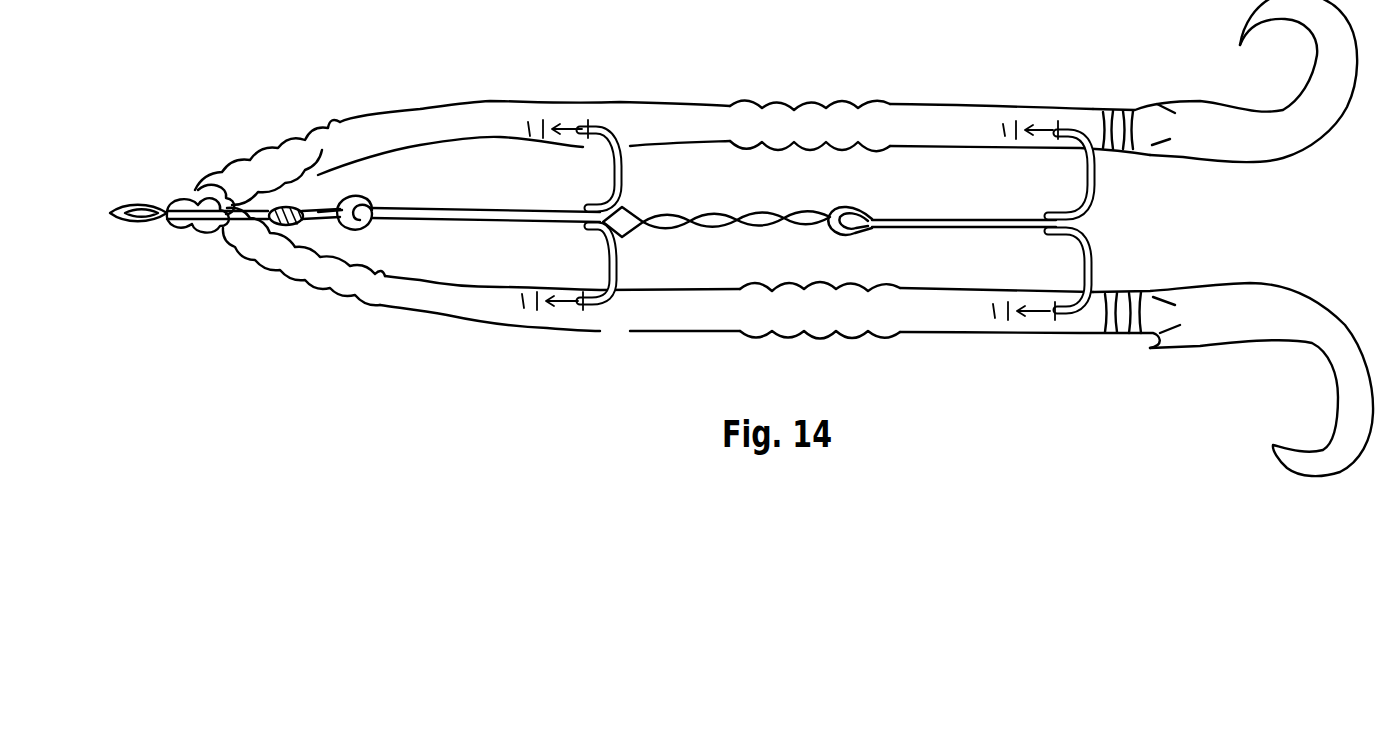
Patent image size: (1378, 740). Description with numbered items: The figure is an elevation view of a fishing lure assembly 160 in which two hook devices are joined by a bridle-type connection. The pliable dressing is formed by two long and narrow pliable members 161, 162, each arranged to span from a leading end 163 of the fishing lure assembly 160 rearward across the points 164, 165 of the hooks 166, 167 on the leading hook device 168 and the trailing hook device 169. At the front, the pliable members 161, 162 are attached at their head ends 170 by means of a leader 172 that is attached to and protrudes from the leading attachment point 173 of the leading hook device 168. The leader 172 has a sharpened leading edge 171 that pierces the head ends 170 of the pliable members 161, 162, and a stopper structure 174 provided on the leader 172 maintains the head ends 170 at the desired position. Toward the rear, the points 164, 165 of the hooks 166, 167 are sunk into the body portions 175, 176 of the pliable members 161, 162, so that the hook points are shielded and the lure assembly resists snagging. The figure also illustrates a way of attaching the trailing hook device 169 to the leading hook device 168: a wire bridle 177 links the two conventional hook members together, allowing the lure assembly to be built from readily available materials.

The fishing lure assembly 160 is at (519, 377).
The pliable member 161 is at (413, 120).
The pliable member 162 is at (435, 300).
The leading end 163 is at (158, 225).
The point 164 is at (555, 128).
The point 165 is at (1028, 126).
The hook 166 is at (623, 155).
The hook 167 is at (1097, 172).
The leading hook device 168 is at (506, 208).
The trailing hook device 169 is at (937, 222).
The head end 170 is at (201, 185).
The sharpened leading edge 171 is at (125, 205).
The leader 172 is at (322, 217).
The leading attachment point 173 is at (370, 227).
The stopper structure 174 is at (286, 205).
The body portion 175 is at (493, 110).
The body portion 176 is at (480, 308).
The wire bridle 177 is at (704, 220).